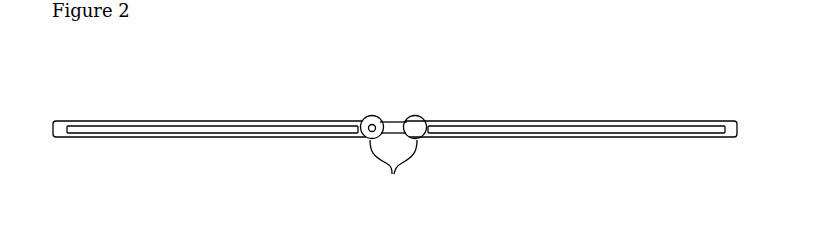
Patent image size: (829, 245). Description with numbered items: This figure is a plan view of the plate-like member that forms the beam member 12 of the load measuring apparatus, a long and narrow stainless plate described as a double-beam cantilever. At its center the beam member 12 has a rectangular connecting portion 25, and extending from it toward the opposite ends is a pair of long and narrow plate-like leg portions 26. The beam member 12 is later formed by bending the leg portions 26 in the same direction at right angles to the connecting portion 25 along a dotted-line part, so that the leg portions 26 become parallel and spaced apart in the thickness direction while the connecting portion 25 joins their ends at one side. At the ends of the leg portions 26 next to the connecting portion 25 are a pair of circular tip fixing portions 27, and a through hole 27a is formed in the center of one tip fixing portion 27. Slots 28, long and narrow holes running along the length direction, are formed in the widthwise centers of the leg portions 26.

The beam member 12 is at (633, 120).
The connecting portion 25 is at (398, 120).
The plate-like leg portions 26 is at (222, 137).
The tip fixing portions 27 is at (393, 175).
The through hole 27a is at (369, 125).
The slots 28 is at (133, 126).